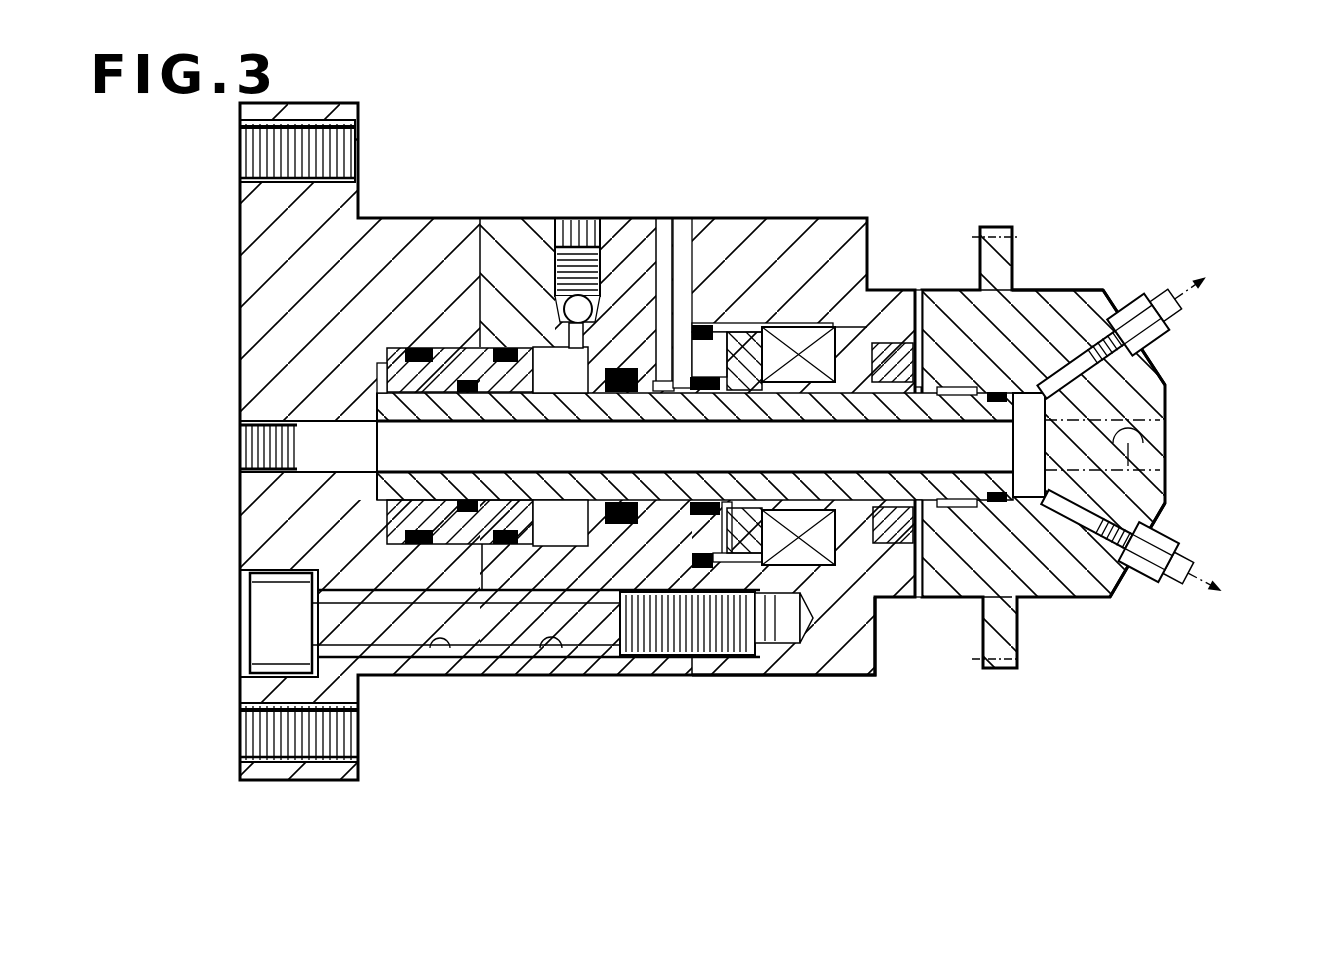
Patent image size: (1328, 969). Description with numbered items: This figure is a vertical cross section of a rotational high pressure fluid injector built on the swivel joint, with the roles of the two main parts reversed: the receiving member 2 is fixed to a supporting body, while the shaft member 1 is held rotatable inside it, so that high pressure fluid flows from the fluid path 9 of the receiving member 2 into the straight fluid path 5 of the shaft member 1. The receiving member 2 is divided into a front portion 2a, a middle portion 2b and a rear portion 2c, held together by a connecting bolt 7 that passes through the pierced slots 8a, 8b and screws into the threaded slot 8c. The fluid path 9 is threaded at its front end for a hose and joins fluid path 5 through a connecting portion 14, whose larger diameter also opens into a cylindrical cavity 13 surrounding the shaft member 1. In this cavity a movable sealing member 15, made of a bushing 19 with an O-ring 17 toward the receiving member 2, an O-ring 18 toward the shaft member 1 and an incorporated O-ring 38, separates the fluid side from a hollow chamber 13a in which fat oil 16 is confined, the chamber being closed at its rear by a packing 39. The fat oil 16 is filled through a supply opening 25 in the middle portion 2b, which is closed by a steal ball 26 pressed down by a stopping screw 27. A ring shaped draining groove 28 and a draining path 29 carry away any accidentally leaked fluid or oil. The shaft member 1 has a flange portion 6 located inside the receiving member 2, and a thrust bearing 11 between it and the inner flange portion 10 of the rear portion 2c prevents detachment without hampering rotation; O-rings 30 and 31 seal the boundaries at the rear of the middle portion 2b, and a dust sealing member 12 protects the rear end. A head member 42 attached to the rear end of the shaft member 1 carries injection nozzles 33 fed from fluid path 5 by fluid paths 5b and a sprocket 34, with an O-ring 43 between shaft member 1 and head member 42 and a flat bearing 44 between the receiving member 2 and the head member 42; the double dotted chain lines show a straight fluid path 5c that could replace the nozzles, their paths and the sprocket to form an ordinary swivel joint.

The shaft member 1 is at (885, 300).
The receiving member 2 is at (448, 210).
The front portion 2a is at (403, 217).
The middle portion 2b is at (512, 217).
The rear portion 2c is at (833, 217).
The fluid path 5 is at (912, 465).
The fluid paths 5b is at (1175, 325).
The straight fluid path 5c is at (1177, 417).
The flange portion 6 is at (792, 320).
The connecting bolt 7 is at (388, 625).
The pierced slot 8a is at (447, 650).
The pierced slot 8b is at (567, 650).
The threaded slot 8c is at (730, 650).
The fluid path 9 is at (263, 463).
The inner flange portion 10 is at (885, 605).
The thrust bearing 11 is at (848, 365).
The dust sealing member 12 is at (900, 343).
The cylindrical cavity 13 is at (455, 352).
The hollow chamber 13a is at (556, 230).
The connecting portion 14 is at (383, 365).
The movable sealing member 15 is at (398, 525).
The fat oil 16 is at (587, 365).
The O-ring 17 is at (506, 363).
The O-ring 18 is at (412, 365).
The bushing 19 is at (465, 392).
The supply opening 25 is at (583, 338).
The steal ball 26 is at (586, 306).
The stopping screw 27 is at (622, 217).
The draining groove 28 is at (706, 392).
The draining path 29 is at (663, 217).
The O-ring 30 is at (722, 217).
The O-ring 31 is at (800, 384).
The injection nozzles 33 is at (1165, 300).
The sprocket 34 is at (997, 390).
The O-ring 38 is at (567, 367).
The packing 39 is at (662, 392).
The head member 42 is at (1168, 372).
The O-ring 43 is at (1075, 320).
The flat bearing 44 is at (940, 560).